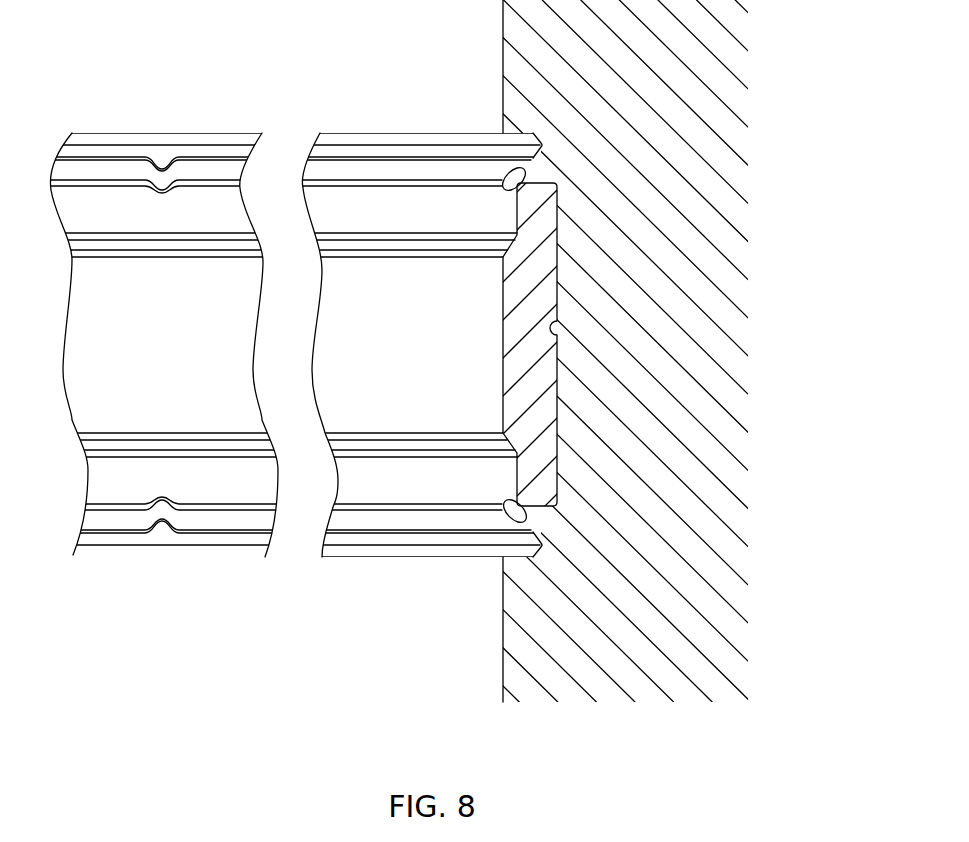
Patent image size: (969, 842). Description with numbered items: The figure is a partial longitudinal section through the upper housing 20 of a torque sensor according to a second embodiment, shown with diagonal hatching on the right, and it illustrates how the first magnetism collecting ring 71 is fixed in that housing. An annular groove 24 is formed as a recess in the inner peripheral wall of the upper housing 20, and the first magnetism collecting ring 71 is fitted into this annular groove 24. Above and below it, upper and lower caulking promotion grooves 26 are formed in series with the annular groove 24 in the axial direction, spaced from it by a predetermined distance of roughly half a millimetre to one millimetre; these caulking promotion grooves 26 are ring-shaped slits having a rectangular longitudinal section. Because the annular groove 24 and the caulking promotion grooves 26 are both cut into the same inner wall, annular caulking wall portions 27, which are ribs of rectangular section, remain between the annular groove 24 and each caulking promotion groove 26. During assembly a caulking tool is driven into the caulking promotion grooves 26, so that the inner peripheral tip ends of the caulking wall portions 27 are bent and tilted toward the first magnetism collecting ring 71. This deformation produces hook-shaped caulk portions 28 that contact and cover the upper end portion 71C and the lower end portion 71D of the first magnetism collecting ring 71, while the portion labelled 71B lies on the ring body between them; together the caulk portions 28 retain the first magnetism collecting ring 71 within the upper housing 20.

The first magnetism collecting ring 71 is at (116, 118).
The pipe body portion 71B is at (370, 297).
The upper end portion 71C is at (360, 213).
The lower end portion 71D is at (370, 476).
The caulk portion 28 is at (161, 188).
The caulking wall portion 27 is at (523, 165).
The caulking promotion groove 26 is at (530, 138).
The annular groove 24 is at (560, 325).
The upper housing 20 is at (680, 156).